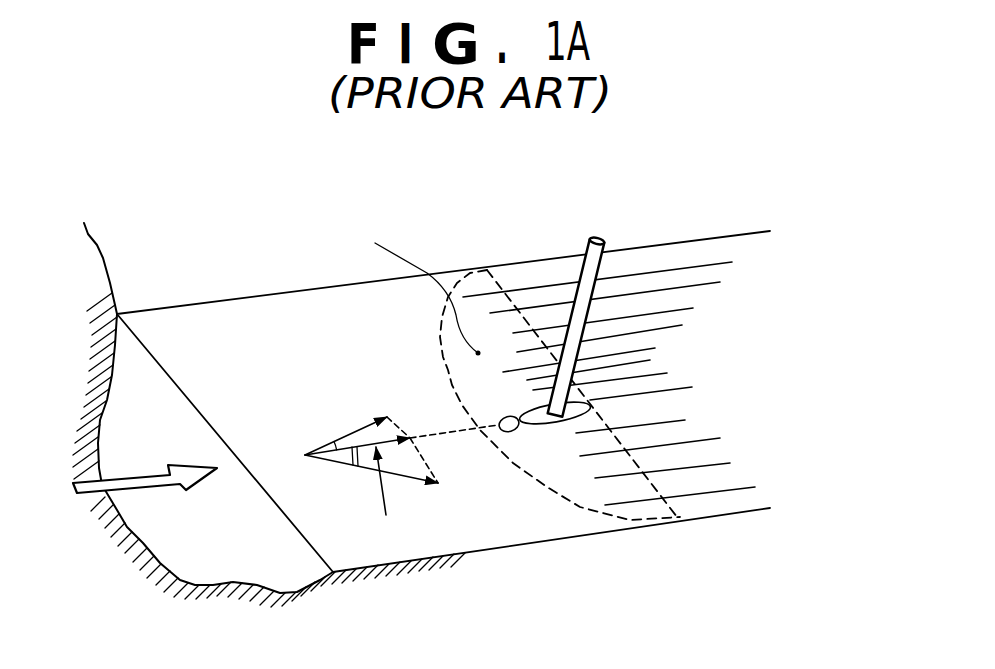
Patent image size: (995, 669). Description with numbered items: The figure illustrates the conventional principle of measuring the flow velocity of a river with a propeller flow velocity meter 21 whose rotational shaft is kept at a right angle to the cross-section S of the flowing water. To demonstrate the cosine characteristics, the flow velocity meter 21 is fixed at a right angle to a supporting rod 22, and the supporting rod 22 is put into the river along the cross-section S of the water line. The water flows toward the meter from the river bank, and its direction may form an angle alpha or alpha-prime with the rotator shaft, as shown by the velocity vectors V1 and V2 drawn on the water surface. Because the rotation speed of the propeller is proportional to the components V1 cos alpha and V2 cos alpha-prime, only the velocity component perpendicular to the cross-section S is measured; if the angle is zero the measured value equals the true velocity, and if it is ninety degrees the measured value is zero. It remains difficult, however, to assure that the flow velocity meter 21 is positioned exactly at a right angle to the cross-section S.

The flow velocity meter 21 is at (623, 405).
The supporting rod 22 is at (604, 243).
The flow velocity V1 is at (348, 419).
The flow velocity V2 is at (385, 482).